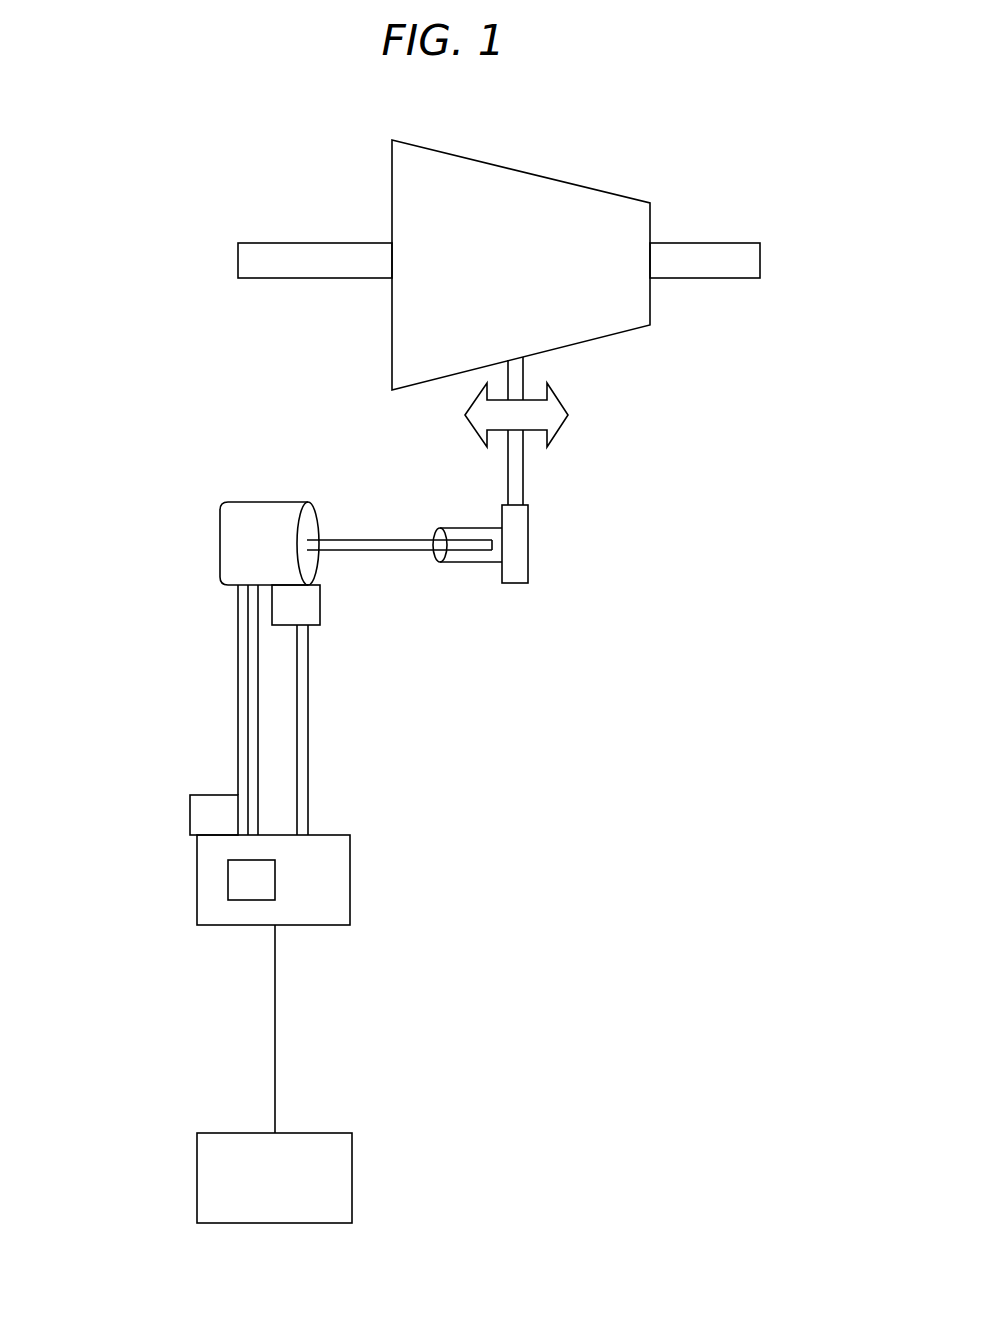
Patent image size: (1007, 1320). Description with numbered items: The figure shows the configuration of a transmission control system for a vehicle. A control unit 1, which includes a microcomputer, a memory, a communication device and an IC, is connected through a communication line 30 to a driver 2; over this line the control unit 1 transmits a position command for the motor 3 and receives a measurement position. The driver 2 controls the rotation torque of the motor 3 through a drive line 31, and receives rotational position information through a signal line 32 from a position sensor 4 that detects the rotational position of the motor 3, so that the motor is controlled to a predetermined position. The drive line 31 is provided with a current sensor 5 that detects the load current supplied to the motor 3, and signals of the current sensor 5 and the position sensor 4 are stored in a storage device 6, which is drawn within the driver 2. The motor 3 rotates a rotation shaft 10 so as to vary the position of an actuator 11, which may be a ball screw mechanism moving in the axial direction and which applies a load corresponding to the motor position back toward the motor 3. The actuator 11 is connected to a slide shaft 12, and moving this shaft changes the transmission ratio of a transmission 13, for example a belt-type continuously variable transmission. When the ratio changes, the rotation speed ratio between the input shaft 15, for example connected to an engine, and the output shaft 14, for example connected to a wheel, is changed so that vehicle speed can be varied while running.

The control unit 1 is at (352, 1177).
The driver 2 is at (350, 880).
The motor 3 is at (220, 563).
The position sensor 4 is at (320, 602).
The current sensor 5 is at (190, 813).
The storage device 6 is at (228, 878).
The rotation shaft 10 is at (382, 540).
The actuator 11 is at (467, 563).
The slide shaft 12 is at (522, 470).
The transmission 13 is at (613, 190).
The output shaft 14 is at (717, 243).
The input shaft 15 is at (312, 243).
The communication line 30 is at (275, 1075).
The drive line 31 is at (237, 695).
The signal line 32 is at (308, 797).